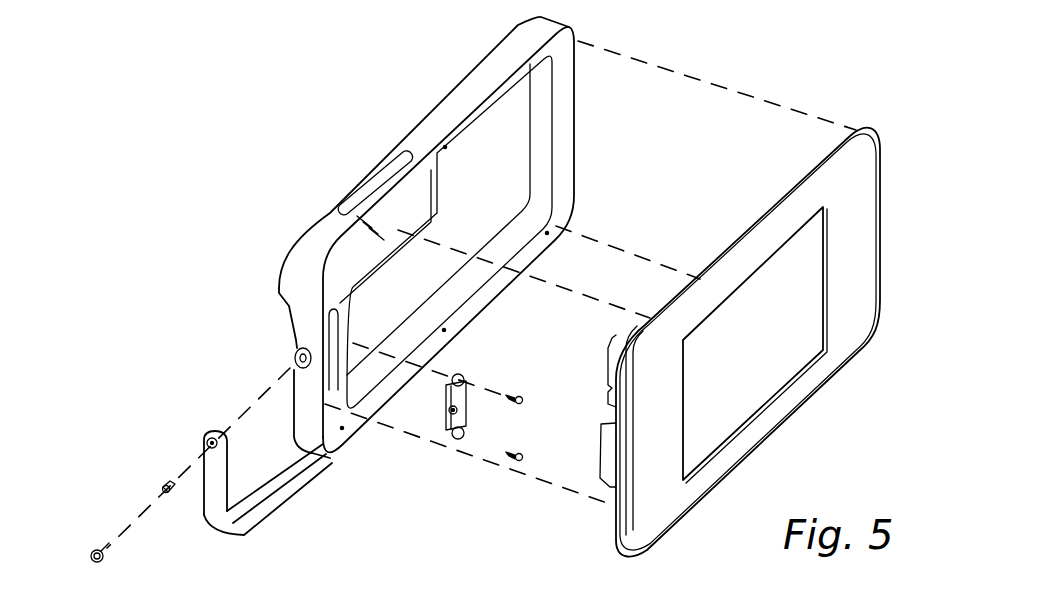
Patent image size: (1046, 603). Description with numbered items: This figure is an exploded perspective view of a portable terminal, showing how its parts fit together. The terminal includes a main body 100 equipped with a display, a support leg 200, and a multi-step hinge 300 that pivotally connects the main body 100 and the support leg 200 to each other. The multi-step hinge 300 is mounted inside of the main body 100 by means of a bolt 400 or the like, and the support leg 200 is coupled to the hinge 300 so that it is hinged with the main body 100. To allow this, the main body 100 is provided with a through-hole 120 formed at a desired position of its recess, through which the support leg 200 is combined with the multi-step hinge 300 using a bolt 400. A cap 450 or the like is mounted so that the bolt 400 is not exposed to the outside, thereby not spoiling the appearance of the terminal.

The main body 100 is at (312, 240).
The through-hole 120 is at (298, 353).
The support leg 200 is at (260, 497).
The multi-step hinge 300 is at (454, 437).
The bolt 400 is at (164, 487).
The cap 450 is at (95, 549).